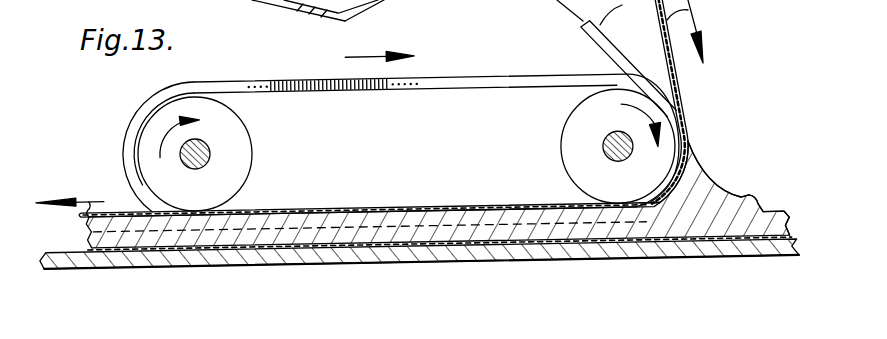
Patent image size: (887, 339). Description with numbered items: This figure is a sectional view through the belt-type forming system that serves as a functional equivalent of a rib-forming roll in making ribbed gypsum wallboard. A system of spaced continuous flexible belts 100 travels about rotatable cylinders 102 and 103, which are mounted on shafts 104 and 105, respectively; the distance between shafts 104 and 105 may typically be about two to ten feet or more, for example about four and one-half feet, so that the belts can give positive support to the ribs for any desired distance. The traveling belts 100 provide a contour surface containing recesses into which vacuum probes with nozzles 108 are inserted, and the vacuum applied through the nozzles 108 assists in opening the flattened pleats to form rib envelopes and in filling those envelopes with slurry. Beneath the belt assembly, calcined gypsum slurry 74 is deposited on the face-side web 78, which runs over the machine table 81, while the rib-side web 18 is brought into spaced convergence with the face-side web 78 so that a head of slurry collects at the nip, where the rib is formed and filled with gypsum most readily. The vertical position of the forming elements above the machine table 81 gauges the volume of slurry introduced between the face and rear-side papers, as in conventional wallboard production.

The rib-side web 18 is at (306, 211).
The calcined gypsum slurry 74 is at (427, 247).
The face-side web 78 is at (647, 242).
The machine table 81 is at (300, 262).
The continuous flexible belts 100 is at (507, 58).
The rotatable cylinder 102 is at (558, 160).
The rotatable cylinder 103 is at (256, 158).
The shaft 104 is at (604, 138).
The shaft 105 is at (180, 153).
The nozzle 108 is at (652, 198).